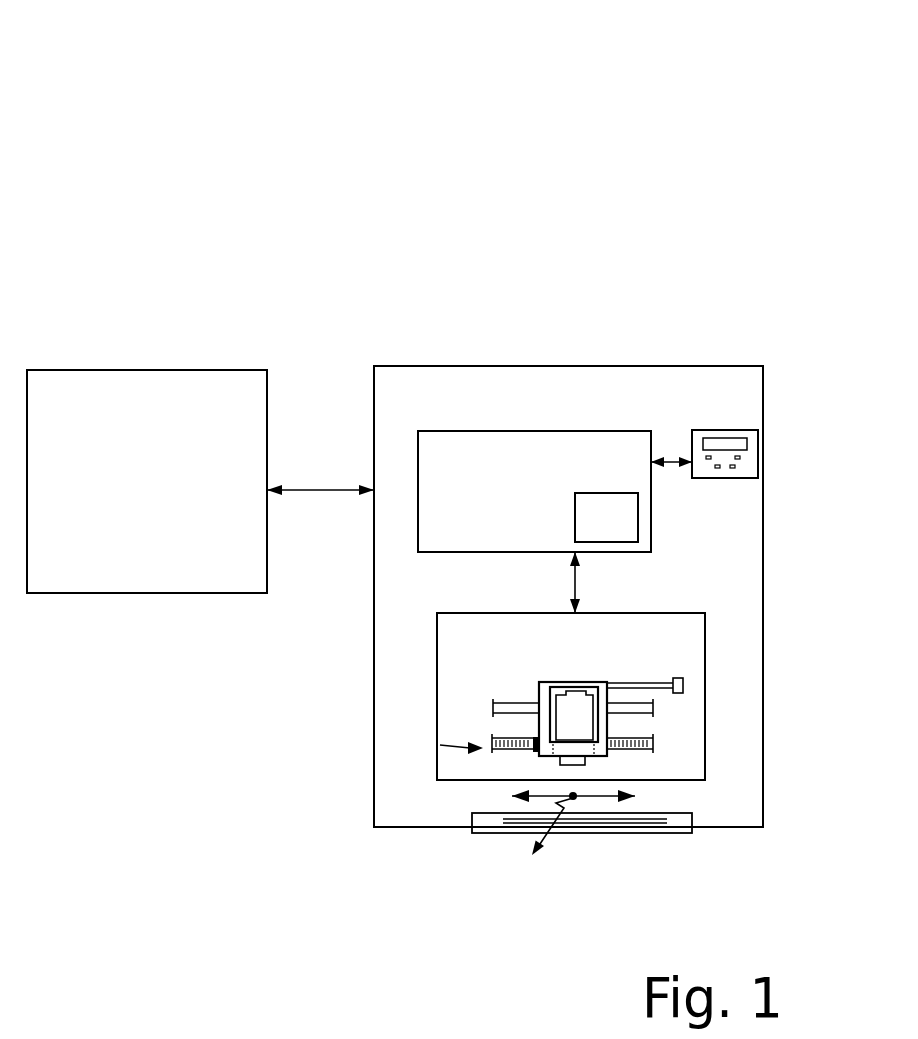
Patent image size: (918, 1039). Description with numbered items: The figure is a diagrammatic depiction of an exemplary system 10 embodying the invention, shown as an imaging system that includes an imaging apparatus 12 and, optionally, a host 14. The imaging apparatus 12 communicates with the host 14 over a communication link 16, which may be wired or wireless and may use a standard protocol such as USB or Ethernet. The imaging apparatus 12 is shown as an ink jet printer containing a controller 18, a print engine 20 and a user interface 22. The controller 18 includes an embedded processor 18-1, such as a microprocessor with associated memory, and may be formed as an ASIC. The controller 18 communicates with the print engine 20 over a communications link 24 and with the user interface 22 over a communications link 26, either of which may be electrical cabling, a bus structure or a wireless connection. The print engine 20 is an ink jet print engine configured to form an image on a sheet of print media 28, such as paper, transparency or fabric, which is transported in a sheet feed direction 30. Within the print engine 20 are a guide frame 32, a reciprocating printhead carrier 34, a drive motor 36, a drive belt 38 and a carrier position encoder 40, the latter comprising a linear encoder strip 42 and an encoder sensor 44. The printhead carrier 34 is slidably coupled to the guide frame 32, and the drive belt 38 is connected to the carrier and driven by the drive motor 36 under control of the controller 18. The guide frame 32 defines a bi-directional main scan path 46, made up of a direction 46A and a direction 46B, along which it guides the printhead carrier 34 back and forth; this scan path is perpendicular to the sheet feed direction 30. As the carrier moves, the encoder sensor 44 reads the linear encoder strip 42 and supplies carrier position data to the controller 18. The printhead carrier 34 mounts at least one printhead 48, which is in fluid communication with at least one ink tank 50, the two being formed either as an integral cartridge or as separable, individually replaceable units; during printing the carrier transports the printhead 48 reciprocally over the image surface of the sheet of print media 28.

The system 10 is at (278, 196).
The imaging apparatus 12 is at (742, 406).
The host 14 is at (159, 502).
The communication link 16 is at (323, 488).
The controller 18 is at (545, 522).
The embedded processor 18-1 is at (638, 517).
The print engine 20 is at (690, 649).
The user interface 22 is at (743, 430).
The communications link 24 is at (566, 587).
The communications link 26 is at (673, 465).
The sheet of print media 28 is at (675, 813).
The sheet feed direction 30 is at (553, 817).
The guide frame 32 is at (539, 690).
The reciprocating printhead carrier 34 is at (497, 702).
The drive motor 36 is at (684, 686).
The drive belt 38 is at (679, 678).
The carrier position encoder 40 is at (533, 740).
The linear encoder strip 42 is at (499, 751).
The encoder sensor 44 is at (441, 745).
The bi-directional main scan path 46 is at (582, 797).
The direction 46A is at (550, 795).
The direction 46B is at (600, 798).
The printhead 48 is at (561, 765).
The ink tank 50 is at (573, 710).